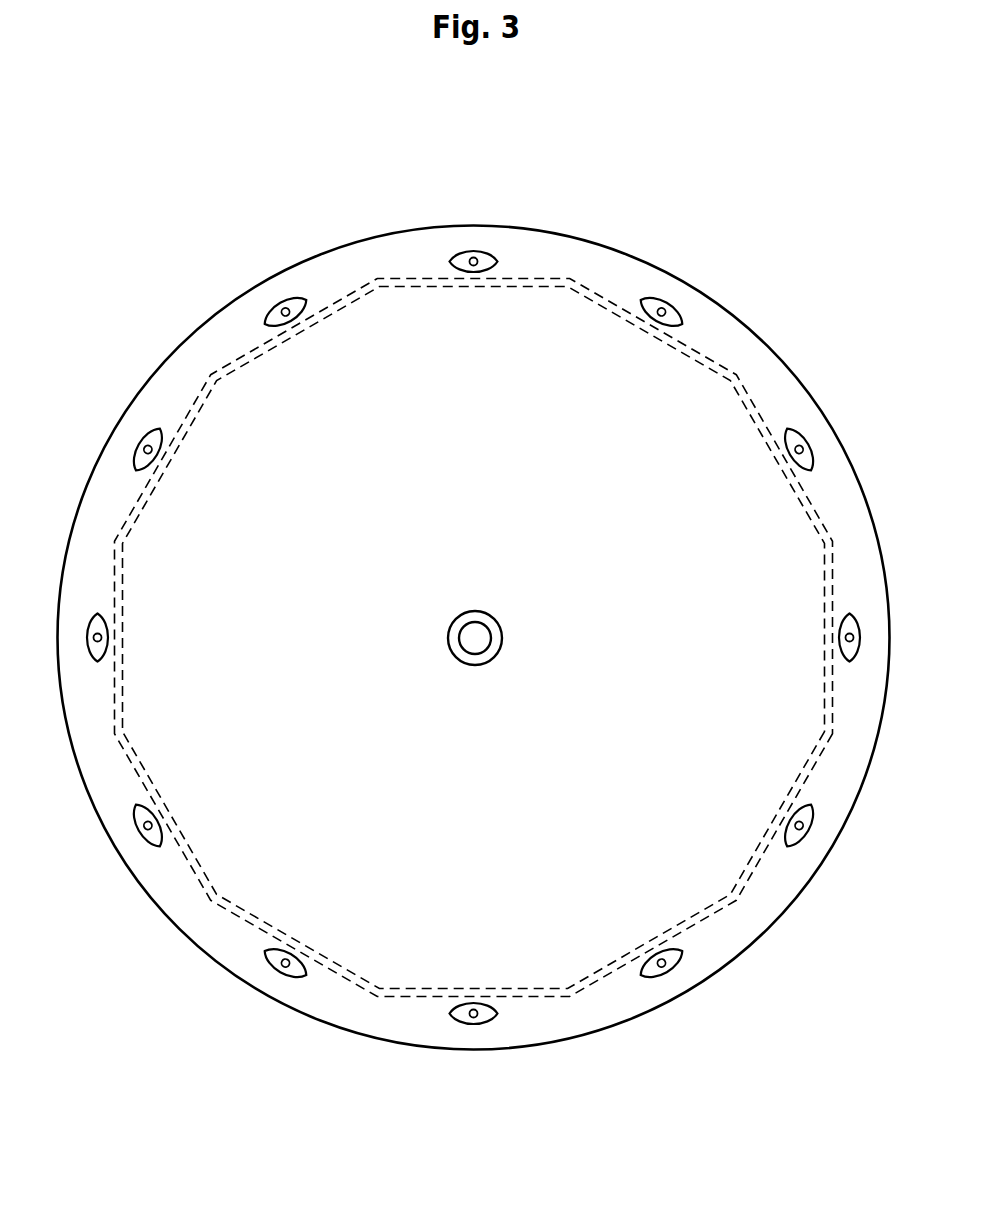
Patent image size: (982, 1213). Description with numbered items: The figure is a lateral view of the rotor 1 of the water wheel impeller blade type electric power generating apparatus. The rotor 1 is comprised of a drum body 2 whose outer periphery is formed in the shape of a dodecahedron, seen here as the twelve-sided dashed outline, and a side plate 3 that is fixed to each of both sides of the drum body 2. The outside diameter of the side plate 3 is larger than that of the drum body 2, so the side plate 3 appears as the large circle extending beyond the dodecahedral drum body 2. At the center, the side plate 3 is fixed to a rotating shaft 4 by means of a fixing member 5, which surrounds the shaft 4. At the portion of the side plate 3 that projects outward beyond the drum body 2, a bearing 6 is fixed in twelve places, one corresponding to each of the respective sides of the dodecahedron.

The rotor 1 is at (793, 352).
The drum body 2 is at (538, 280).
The side plate 3 is at (608, 258).
The rotating shaft 4 is at (483, 634).
The fixing member 5 is at (488, 655).
The bearing 6 is at (663, 306).